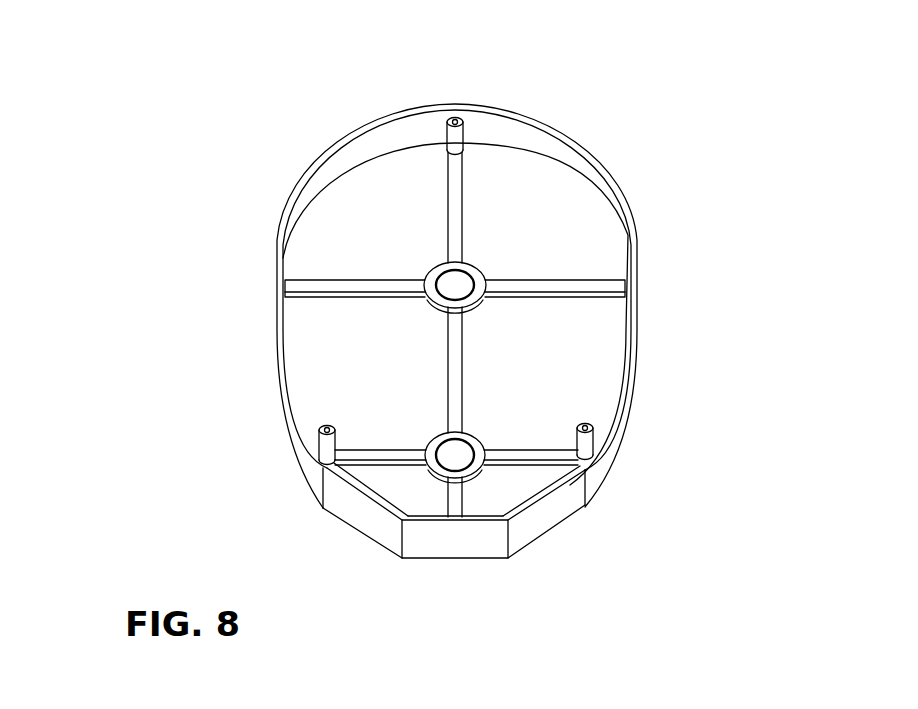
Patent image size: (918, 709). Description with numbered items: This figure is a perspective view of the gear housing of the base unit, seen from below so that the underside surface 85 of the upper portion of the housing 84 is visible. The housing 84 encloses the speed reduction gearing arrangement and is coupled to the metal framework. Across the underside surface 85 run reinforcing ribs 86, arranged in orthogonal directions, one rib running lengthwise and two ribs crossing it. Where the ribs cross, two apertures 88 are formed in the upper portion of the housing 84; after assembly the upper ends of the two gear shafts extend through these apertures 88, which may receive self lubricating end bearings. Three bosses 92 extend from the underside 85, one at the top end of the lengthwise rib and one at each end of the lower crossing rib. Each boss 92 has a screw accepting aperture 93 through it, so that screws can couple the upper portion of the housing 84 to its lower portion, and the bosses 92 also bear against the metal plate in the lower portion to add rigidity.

The housing 84 is at (745, 258).
The underside surface 85 is at (455, 314).
The reinforcing ribs 86 is at (522, 302).
The apertures 88 is at (437, 340).
The bosses 92 is at (440, 140).
The screw accepting apertures 93 is at (459, 108).